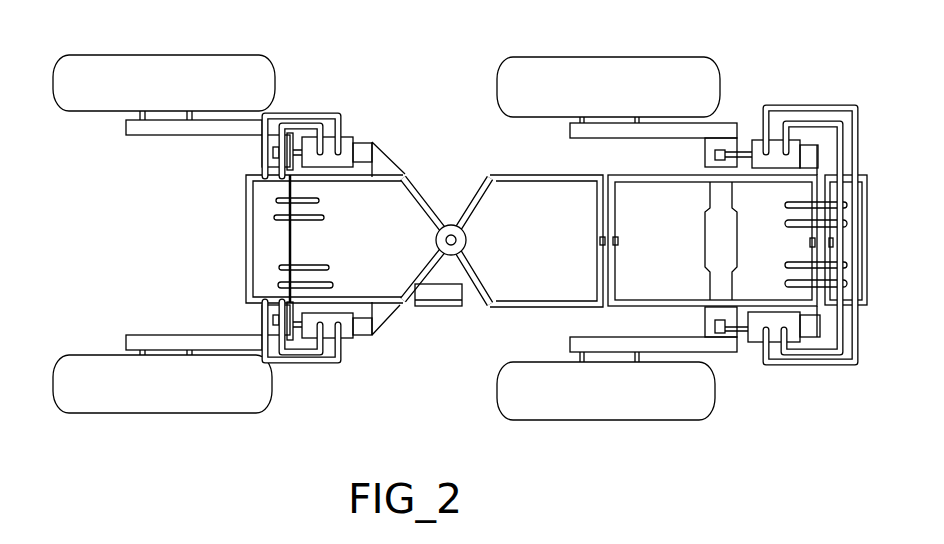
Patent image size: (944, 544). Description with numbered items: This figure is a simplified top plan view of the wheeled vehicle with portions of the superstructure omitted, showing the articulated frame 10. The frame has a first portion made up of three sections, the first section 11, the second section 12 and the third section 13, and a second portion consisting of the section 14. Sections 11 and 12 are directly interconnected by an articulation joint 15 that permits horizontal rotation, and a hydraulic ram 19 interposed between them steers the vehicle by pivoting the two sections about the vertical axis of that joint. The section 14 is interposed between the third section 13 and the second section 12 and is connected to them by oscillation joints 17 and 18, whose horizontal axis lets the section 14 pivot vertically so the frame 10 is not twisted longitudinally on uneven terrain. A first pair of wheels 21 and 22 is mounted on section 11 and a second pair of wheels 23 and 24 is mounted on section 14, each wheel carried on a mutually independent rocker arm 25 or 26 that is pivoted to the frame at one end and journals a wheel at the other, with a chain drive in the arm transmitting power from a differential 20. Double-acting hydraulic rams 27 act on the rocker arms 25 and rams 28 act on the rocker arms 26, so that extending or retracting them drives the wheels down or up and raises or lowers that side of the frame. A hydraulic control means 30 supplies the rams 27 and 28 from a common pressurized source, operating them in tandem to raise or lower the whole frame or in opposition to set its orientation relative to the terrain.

The articulated frame 10 is at (442, 140).
The first section 11 is at (389, 298).
The second section 12 is at (517, 299).
The third section 13 is at (868, 296).
The section of second frame portion 14 is at (668, 184).
The articulation joint 15 is at (466, 256).
The oscillation joint 17 is at (598, 239).
The oscillation joint 18 is at (804, 241).
The hydraulic ram 19 is at (453, 307).
The differential 20 is at (705, 252).
The wheel 21 is at (138, 408).
The wheel 22 is at (166, 64).
The wheel 23 is at (680, 409).
The wheel 24 is at (606, 64).
The rocker arm 25 is at (165, 336).
The rocker arm 26 is at (205, 128).
The hydraulic ram 27 is at (350, 337).
The hydraulic ram 28 is at (347, 142).
The hydraulic control means 30 is at (262, 238).